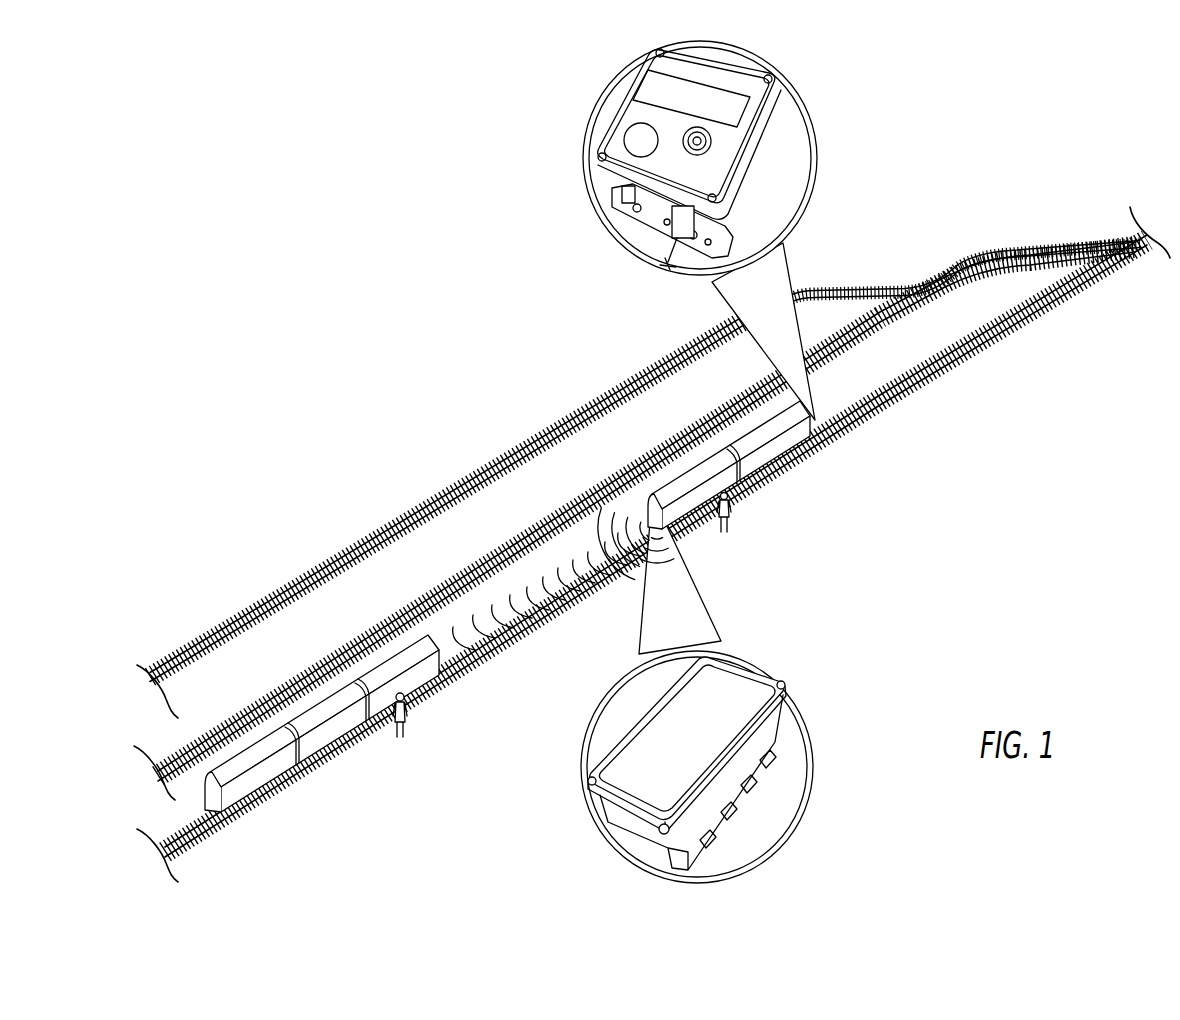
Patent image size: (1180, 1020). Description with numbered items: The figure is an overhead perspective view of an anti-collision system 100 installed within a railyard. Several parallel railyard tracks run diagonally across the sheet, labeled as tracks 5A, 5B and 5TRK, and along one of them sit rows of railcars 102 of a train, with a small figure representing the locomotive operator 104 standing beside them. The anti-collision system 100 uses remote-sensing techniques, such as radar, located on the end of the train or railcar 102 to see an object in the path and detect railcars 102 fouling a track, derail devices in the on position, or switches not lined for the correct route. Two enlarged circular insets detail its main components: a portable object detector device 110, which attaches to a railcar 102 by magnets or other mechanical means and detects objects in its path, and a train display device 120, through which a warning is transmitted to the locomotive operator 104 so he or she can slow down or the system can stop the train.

The anti-collision system 100 is at (652, 548).
The railcar 102 is at (313, 742).
The locomotive operator 104 is at (406, 715).
The portable object detector device 110 is at (688, 730).
The train display device 120 is at (718, 145).
The first rail track 5A is at (634, 521).
The second rail track 5B is at (653, 462).
The track 5TRK is at (642, 562).